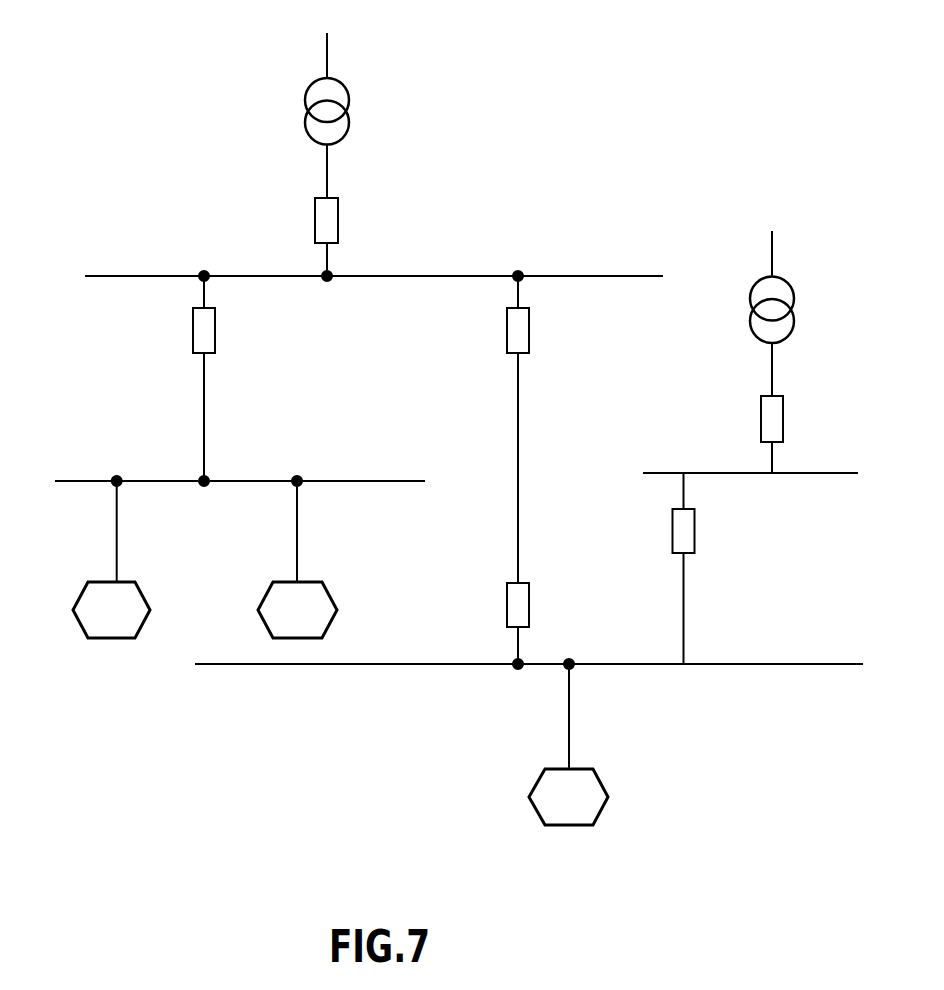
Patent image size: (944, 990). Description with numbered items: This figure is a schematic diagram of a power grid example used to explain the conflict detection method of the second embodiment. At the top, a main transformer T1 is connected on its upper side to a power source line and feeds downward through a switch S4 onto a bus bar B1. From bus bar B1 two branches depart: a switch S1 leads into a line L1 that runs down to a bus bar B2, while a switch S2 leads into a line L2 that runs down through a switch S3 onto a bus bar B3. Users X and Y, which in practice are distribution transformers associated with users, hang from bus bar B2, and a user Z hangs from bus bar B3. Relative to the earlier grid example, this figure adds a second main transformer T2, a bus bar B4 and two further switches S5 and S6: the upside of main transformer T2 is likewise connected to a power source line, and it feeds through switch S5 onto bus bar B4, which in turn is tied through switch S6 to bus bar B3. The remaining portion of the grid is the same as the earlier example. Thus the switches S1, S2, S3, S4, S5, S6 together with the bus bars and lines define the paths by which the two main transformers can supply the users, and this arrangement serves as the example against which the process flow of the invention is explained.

The bus bar B1 is at (360, 277).
The bus bar B2 is at (224, 483).
The bus bar B3 is at (511, 665).
The bus bar B4 is at (734, 475).
The main transformer T1 is at (346, 115).
The main transformer T2 is at (792, 313).
The switch S1 is at (226, 314).
The switch S2 is at (541, 314).
The switch S3 is at (541, 623).
The switch S4 is at (347, 237).
The switch S5 is at (794, 434).
The switch S6 is at (701, 568).
The line L1 is at (225, 417).
The line L2 is at (539, 468).
The user X is at (102, 567).
The user Y is at (294, 567).
The user Z is at (560, 747).